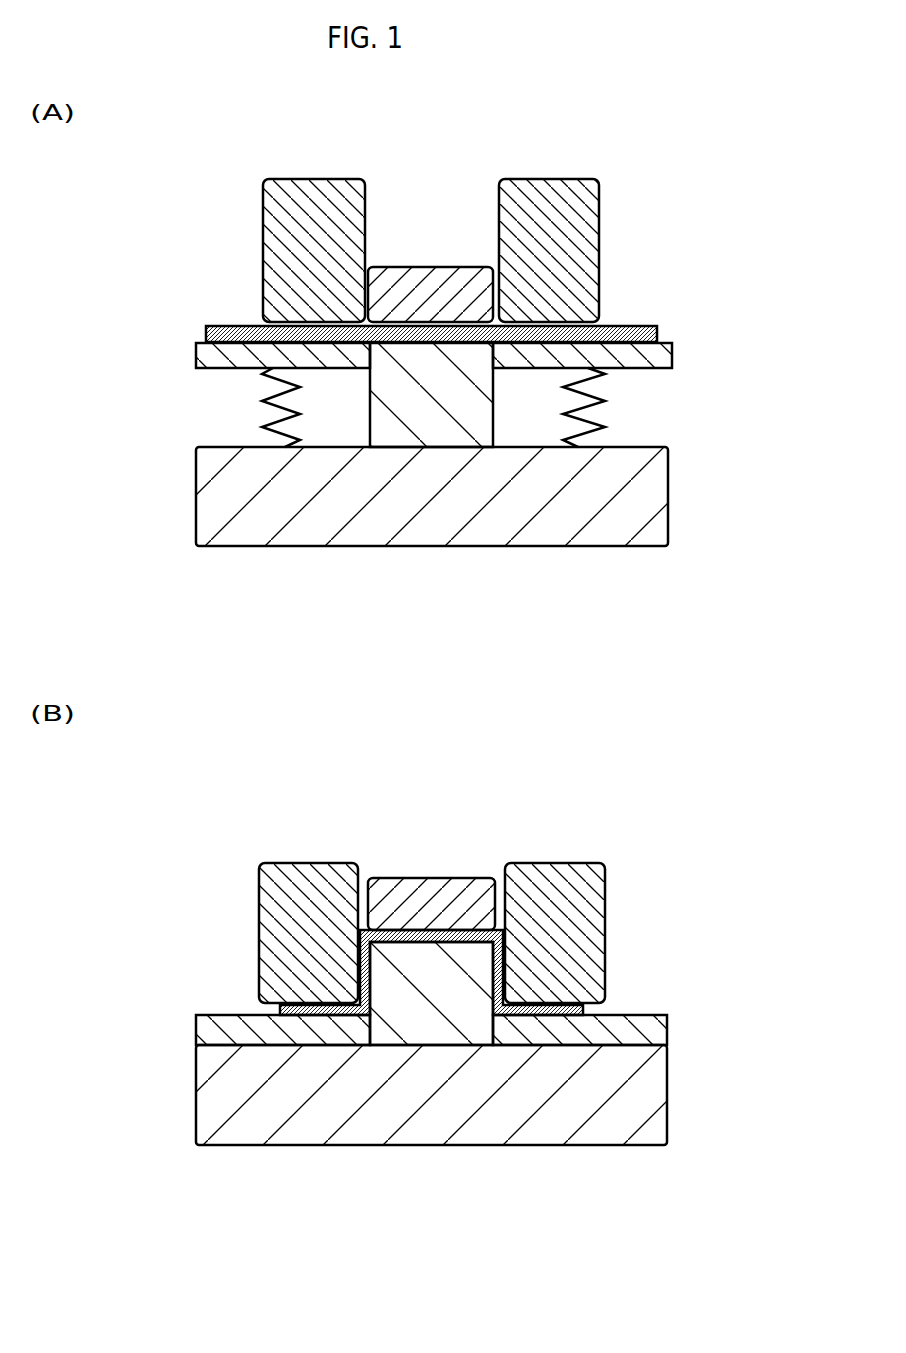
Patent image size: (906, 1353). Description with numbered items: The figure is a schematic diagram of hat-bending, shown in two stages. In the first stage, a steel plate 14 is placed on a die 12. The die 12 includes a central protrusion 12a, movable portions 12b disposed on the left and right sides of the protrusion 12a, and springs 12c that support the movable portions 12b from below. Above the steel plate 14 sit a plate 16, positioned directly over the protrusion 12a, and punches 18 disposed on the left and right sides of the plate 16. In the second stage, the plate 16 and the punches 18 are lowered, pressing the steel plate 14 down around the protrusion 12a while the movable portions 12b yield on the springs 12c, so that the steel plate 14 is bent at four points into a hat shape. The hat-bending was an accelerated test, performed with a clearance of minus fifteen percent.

The die 12 is at (688, 488).
The protrusion 12a is at (370, 405).
The movable portions 12b is at (196, 348).
The springs 12c is at (262, 388).
The steel plate 14 is at (645, 326).
The plate 16 is at (403, 267).
The punches 18 is at (263, 218).